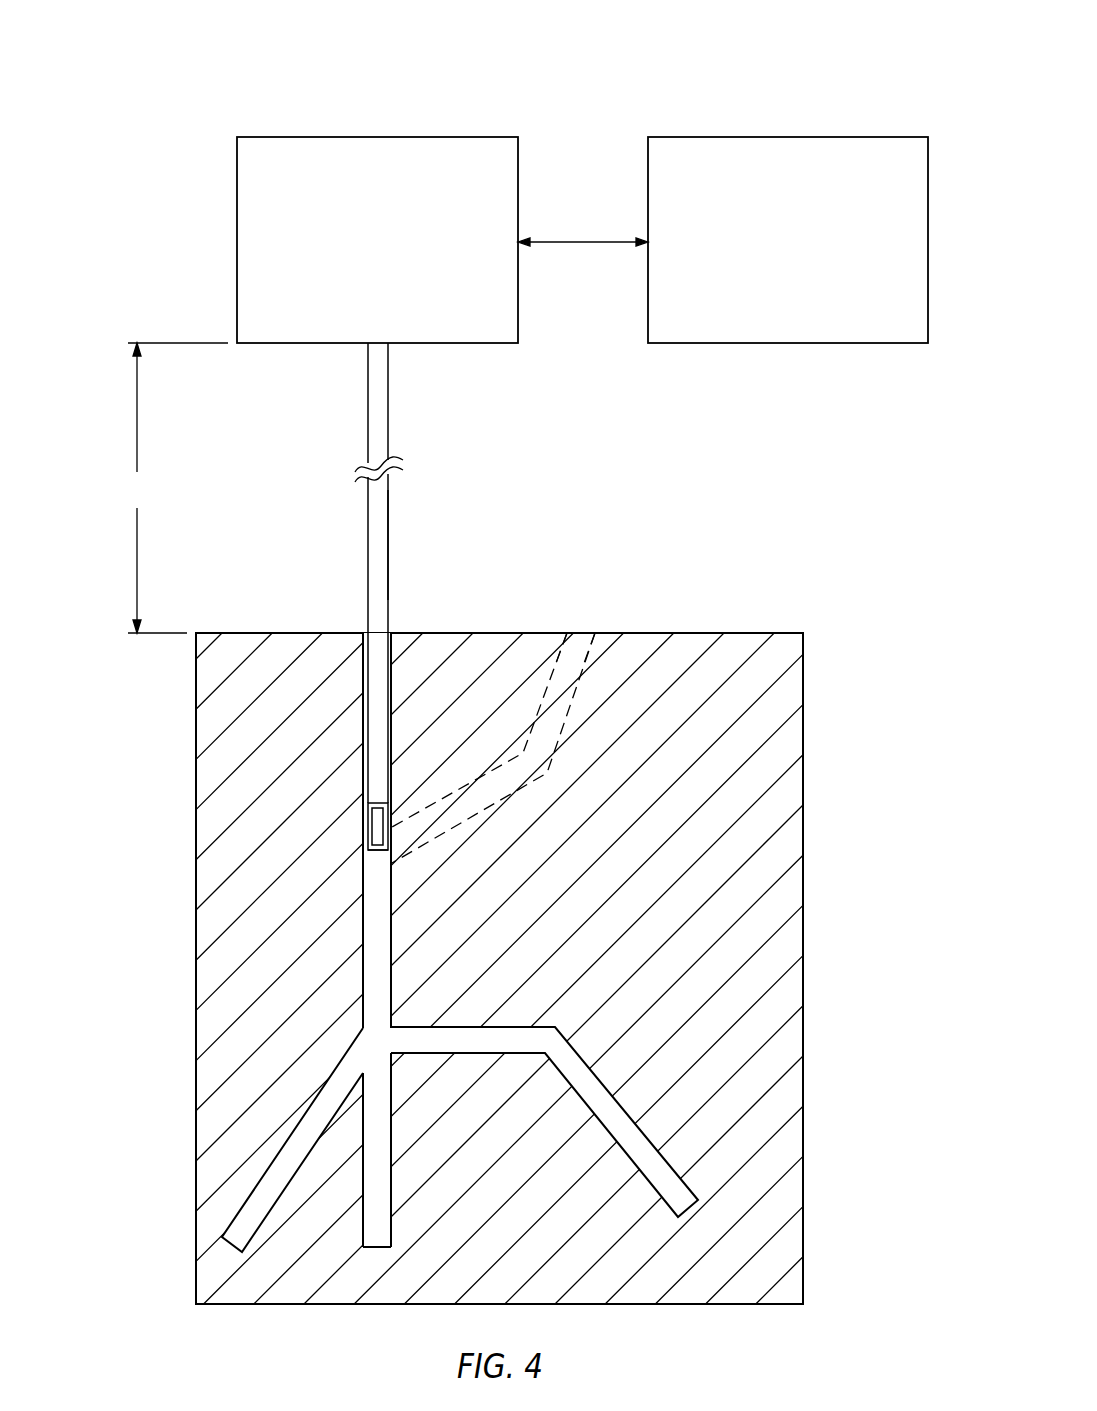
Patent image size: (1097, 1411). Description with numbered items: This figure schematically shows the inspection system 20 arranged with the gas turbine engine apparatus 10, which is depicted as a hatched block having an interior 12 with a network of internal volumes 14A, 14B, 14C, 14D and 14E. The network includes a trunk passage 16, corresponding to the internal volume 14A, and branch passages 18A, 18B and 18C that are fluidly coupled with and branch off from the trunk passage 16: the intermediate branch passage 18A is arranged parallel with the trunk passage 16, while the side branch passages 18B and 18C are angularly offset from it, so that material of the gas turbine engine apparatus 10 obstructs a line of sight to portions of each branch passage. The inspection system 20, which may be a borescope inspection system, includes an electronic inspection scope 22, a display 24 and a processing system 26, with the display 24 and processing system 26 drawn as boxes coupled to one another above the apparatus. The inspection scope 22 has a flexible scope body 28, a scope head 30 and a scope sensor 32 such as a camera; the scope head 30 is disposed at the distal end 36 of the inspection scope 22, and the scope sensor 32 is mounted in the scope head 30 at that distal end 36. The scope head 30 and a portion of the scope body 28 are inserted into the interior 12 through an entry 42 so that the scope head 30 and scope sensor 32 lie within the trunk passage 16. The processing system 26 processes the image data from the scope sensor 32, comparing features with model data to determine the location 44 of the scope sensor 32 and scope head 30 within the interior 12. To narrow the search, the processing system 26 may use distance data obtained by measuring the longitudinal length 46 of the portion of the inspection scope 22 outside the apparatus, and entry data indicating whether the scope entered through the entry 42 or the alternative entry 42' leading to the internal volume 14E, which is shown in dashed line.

The gas turbine engine apparatus 10 is at (866, 614).
The interior 12 is at (405, 1012).
The internal volume 14A is at (306, 830).
The trunk passage 16 is at (372, 963).
The internal volume 14B is at (457, 1150).
The branch passage 18A is at (382, 1215).
The internal volume 14C is at (217, 1140).
The branch passage 18B is at (257, 1196).
The internal volume 14D is at (557, 1122).
The branch passage 18C is at (615, 1115).
The internal volume 14E is at (567, 678).
The inspection system 20 is at (582, 174).
The inspection scope 22 is at (348, 508).
The display 24 is at (760, 127).
The processing system 26 is at (345, 127).
The scope body 28 is at (388, 543).
The scope head 30 is at (368, 820).
The scope sensor 32 is at (375, 833).
The distal end 36 is at (372, 852).
The entry 42 is at (400, 637).
The entry 42' is at (586, 614).
The location 44 is at (400, 810).
The longitudinal length 46 is at (175, 488).